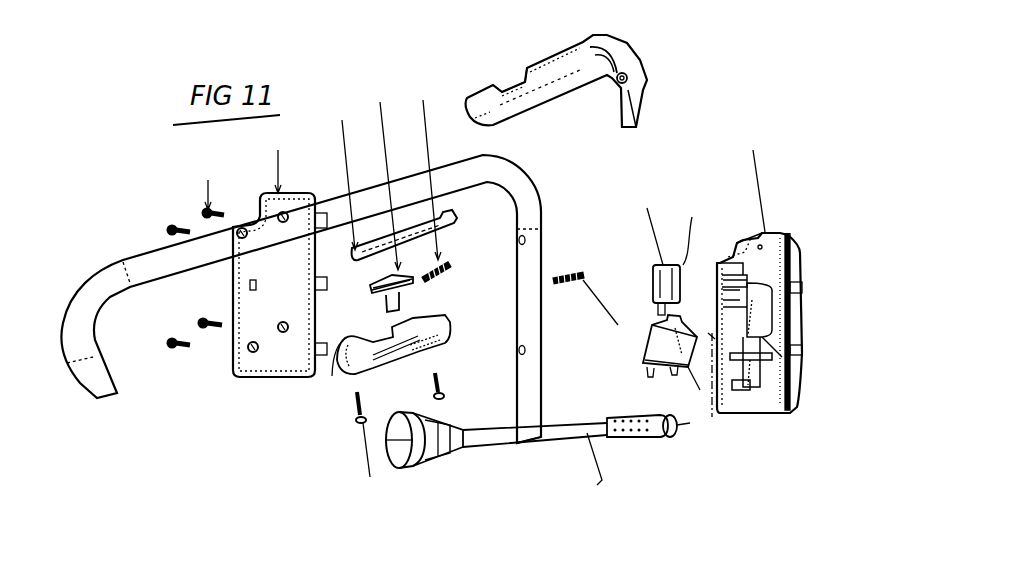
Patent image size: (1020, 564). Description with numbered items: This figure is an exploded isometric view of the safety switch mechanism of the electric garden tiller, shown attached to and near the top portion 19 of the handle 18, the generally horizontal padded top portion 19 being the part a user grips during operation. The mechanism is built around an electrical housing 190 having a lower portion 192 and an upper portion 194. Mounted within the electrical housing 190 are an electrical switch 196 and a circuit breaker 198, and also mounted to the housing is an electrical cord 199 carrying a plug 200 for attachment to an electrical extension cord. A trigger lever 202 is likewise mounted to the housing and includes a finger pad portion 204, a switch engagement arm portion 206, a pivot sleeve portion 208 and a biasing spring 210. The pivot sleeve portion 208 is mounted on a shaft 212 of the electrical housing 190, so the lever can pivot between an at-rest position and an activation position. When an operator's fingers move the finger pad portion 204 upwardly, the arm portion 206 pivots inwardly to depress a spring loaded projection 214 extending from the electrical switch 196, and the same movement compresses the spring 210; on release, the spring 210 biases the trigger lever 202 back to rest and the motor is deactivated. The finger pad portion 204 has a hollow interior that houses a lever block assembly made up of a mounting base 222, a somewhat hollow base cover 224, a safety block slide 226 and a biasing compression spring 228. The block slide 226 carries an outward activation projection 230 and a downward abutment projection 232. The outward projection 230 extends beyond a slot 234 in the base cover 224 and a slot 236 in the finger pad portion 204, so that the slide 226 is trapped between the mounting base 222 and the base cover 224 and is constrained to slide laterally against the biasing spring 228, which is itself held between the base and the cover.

The handle 18 is at (549, 366).
The top portion 19 is at (157, 263).
The electrical housing 190 is at (800, 418).
The lower portion 192 is at (747, 413).
The upper portion 194 is at (245, 363).
The electrical switch 196 is at (652, 285).
The circuit breaker 198 is at (647, 343).
The electrical cord 199 is at (567, 428).
The plug 200 is at (408, 457).
The trigger lever 202 is at (560, 39).
The finger pad portion 204 is at (528, 97).
The switch engagement arm portion 206 is at (637, 127).
The pivot sleeve portion 208 is at (607, 80).
The biasing spring 210 is at (563, 270).
The shaft 212 is at (770, 221).
The spring loaded projection 214 is at (676, 227).
The mounting base 222 is at (455, 212).
The base cover 224 is at (456, 335).
The safety block slide 226 is at (414, 297).
The biasing compression spring 228 is at (441, 277).
The outward activation projection 230 is at (370, 287).
The downward abutment projection 232 is at (387, 302).
The slot 234 is at (337, 350).
The slot 236 is at (507, 90).